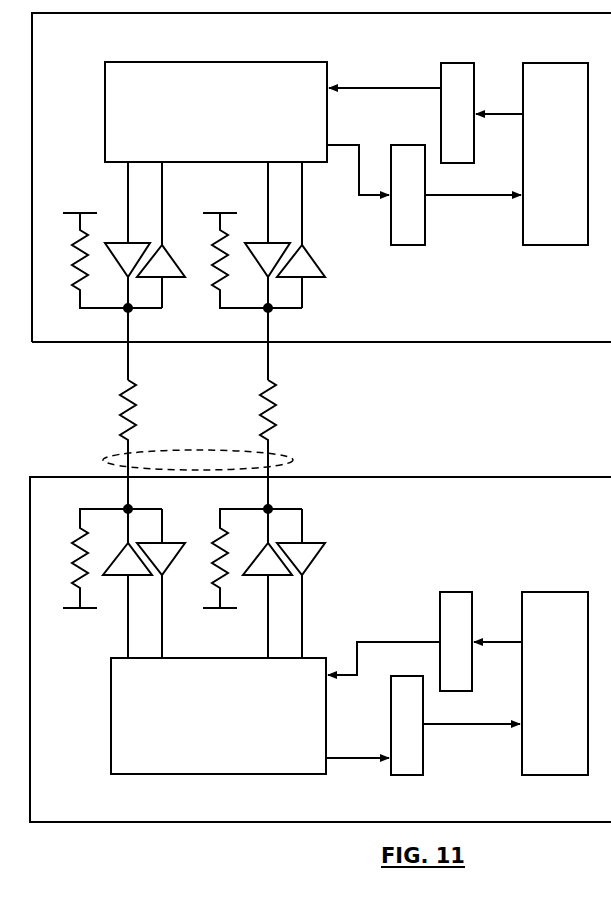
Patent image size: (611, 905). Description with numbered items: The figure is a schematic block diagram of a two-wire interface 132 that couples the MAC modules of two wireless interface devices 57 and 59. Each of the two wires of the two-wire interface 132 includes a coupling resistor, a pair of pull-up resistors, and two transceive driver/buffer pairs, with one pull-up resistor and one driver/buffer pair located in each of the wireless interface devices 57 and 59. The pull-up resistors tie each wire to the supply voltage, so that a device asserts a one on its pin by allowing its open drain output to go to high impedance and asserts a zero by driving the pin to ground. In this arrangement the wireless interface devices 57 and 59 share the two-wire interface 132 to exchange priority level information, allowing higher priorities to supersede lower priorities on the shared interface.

The wireless interface device 57 is at (321, 196).
The wireless interface device 59 is at (320, 649).
The 2-wire interface 132 is at (293, 460).